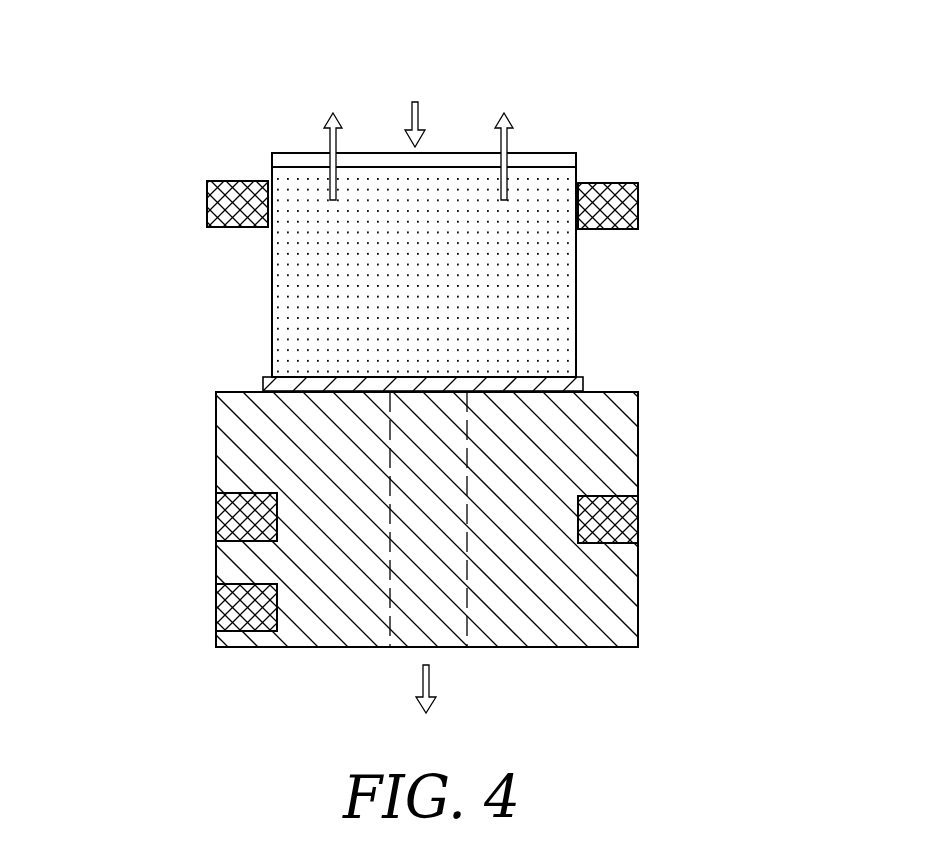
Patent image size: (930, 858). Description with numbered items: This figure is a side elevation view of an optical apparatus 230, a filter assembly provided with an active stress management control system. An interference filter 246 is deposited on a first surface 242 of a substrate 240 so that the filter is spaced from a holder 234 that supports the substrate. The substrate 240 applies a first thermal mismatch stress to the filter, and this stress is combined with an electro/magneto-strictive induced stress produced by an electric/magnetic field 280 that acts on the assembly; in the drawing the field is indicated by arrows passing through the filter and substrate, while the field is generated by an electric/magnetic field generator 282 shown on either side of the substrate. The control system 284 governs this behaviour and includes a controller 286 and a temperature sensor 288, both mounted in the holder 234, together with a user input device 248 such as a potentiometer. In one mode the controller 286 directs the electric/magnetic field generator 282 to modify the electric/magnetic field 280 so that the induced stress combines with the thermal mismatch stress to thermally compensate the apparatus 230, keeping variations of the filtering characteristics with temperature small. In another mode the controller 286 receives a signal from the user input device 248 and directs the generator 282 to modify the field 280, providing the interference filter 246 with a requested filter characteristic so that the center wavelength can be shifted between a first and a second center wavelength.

The optical apparatus 230 is at (596, 103).
The substrate 240 is at (555, 291).
The first surface 242 is at (366, 166).
The interference filter 246 is at (452, 156).
The electric/magnetic field 280 is at (333, 112).
The electric/magnetic field generator 282 is at (207, 190).
The holder 234 is at (630, 419).
The control system 284 is at (680, 567).
The controller 286 is at (639, 520).
The temperature sensor 288 is at (216, 514).
The user input device 248 is at (216, 610).